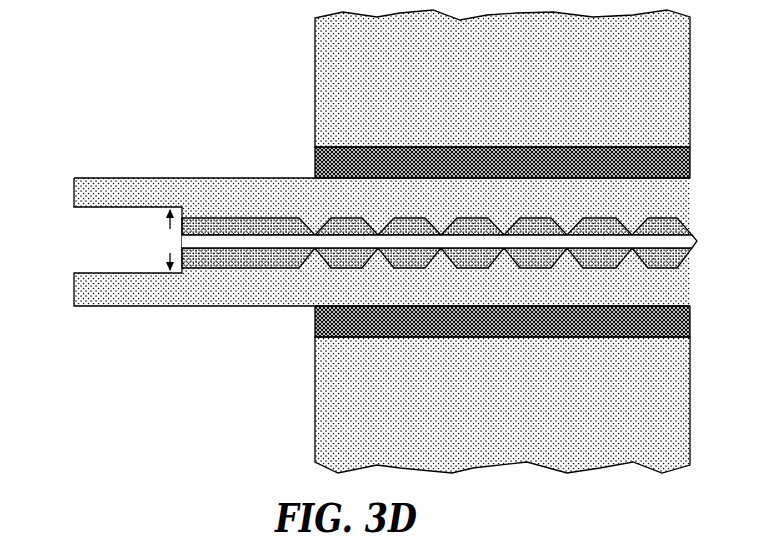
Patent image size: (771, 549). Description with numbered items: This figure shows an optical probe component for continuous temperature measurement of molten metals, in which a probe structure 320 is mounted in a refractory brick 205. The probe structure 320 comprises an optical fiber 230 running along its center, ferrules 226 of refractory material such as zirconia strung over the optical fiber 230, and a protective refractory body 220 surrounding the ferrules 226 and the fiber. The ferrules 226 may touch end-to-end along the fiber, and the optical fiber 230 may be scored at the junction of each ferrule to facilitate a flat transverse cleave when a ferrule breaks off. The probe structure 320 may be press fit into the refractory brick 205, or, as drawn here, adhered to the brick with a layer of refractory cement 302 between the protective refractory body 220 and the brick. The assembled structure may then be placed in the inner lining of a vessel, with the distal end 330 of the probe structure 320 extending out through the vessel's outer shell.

The refractory brick 205 is at (502, 78).
The refractory cement 302 is at (687, 163).
The probe structure 320 is at (248, 151).
The protective refractory body 220 is at (436, 242).
The distal end 330 is at (81, 167).
The ferrules 226 is at (672, 219).
The optical fiber 230 is at (696, 243).